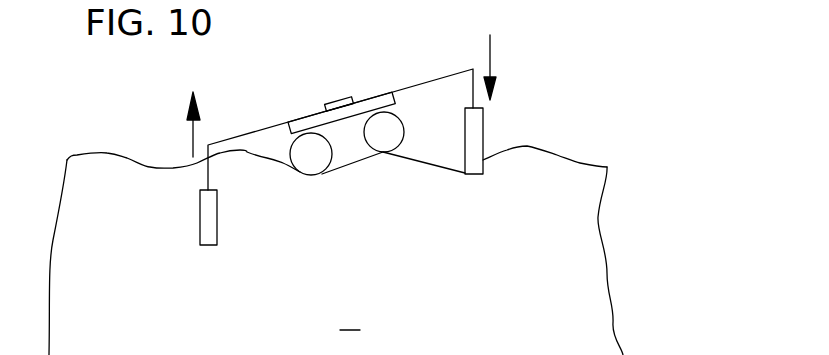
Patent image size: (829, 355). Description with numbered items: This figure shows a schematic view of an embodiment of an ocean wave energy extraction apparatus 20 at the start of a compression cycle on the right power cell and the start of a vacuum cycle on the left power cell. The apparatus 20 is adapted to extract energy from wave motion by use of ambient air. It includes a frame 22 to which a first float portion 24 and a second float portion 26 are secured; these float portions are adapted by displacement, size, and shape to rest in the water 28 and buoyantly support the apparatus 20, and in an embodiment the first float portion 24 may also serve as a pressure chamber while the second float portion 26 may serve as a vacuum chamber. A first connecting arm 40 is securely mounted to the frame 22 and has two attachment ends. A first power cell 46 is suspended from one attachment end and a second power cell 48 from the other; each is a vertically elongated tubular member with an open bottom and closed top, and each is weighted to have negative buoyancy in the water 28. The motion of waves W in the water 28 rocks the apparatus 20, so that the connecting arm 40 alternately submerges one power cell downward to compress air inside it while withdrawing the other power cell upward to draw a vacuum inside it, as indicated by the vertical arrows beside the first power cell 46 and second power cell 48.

The ocean wave energy extraction apparatus 20 is at (338, 139).
The frame 22 is at (362, 110).
The first float portion 24 is at (395, 142).
The second float portion 26 is at (290, 147).
The water 28 is at (336, 257).
The first connecting arm 40 is at (432, 78).
The first power cell 46 is at (200, 222).
The second power cell 48 is at (485, 136).
The waves W is at (112, 155).